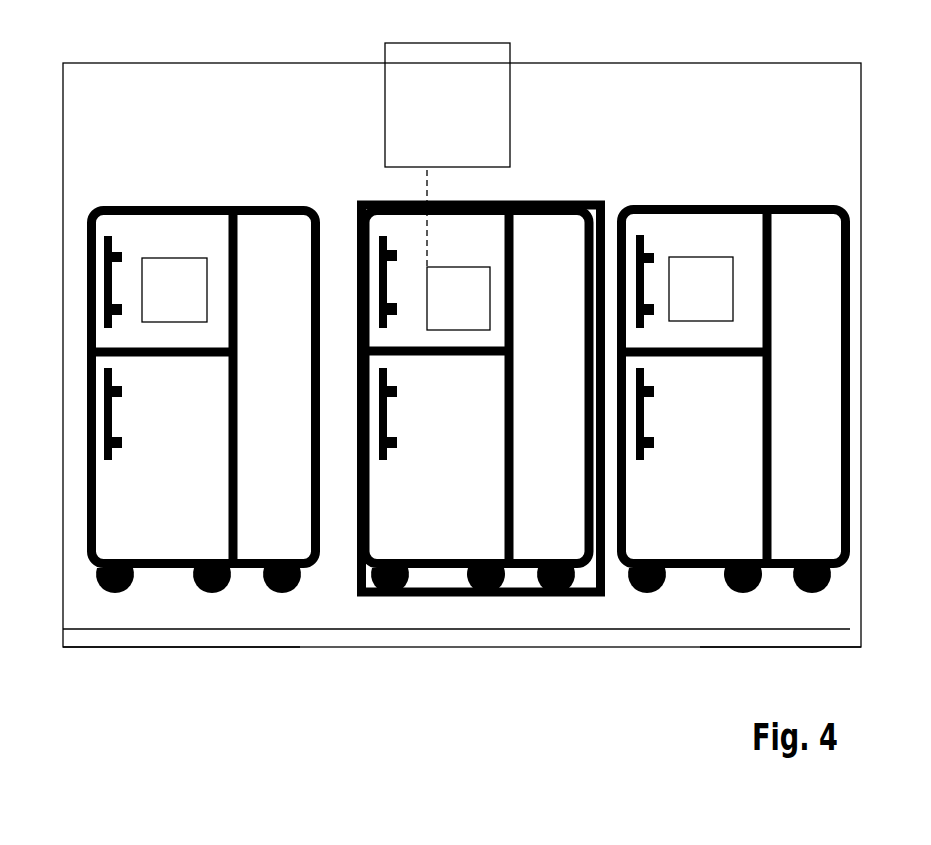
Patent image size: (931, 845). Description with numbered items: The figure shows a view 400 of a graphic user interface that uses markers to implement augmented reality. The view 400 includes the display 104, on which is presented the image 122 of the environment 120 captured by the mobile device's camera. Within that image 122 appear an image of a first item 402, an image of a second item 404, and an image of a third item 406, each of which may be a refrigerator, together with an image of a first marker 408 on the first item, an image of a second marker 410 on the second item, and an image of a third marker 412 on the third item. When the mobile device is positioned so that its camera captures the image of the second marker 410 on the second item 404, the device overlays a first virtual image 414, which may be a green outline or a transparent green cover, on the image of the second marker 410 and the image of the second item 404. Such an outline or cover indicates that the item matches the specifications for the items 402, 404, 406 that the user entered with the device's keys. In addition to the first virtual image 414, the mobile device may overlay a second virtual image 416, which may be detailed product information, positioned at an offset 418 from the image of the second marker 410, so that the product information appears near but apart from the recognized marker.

The view 400 is at (441, 50).
The display 104 is at (849, 612).
The environment 120 is at (53, 596).
The image of the environment 122 is at (309, 598).
The image of a first item 402 is at (203, 406).
The image of a second item 404 is at (477, 406).
The image of a third item 406 is at (733, 410).
The image of a first marker 408 is at (185, 258).
The image of a second marker 410 is at (480, 267).
The image of a third marker 412 is at (715, 257).
The first virtual image 414 is at (560, 598).
The second virtual image 416 is at (387, 88).
The offset 418 is at (427, 180).